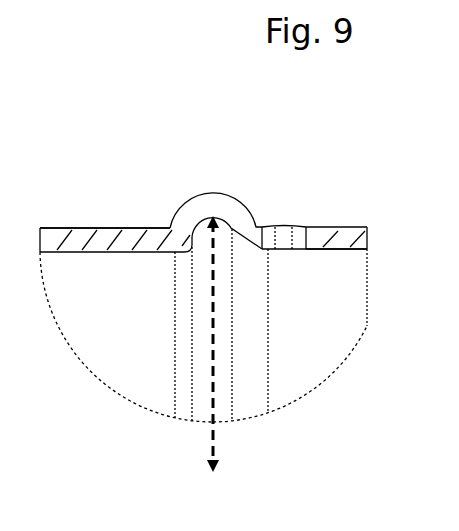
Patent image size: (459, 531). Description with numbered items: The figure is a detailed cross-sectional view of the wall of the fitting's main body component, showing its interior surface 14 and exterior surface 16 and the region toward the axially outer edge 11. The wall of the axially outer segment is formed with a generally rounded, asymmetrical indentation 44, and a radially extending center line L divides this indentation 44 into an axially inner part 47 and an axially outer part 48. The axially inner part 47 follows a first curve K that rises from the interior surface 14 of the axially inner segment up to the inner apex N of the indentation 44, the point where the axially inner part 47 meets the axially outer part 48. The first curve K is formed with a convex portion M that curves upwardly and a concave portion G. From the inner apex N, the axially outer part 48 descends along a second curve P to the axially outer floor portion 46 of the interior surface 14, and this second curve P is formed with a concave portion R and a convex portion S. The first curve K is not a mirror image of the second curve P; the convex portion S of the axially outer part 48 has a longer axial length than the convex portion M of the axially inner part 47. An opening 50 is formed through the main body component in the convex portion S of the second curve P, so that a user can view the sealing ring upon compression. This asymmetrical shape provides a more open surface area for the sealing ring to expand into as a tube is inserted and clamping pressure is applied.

The axially outer edge 11 is at (365, 239).
The interior surface 14 is at (107, 254).
The exterior surface 16 is at (76, 227).
The indentation 44 is at (181, 203).
The axially outer floor portion 46 is at (349, 250).
The axially inner part 47 is at (165, 356).
The axially outer part 48 is at (281, 348).
The opening 50 is at (299, 222).
The concave portion G is at (200, 215).
The inner apex N is at (215, 212).
The first curve K is at (185, 226).
The second curve P is at (242, 221).
The convex portion M is at (182, 254).
The concave portion R is at (228, 225).
The convex portion S is at (252, 246).
The center line L is at (217, 344).